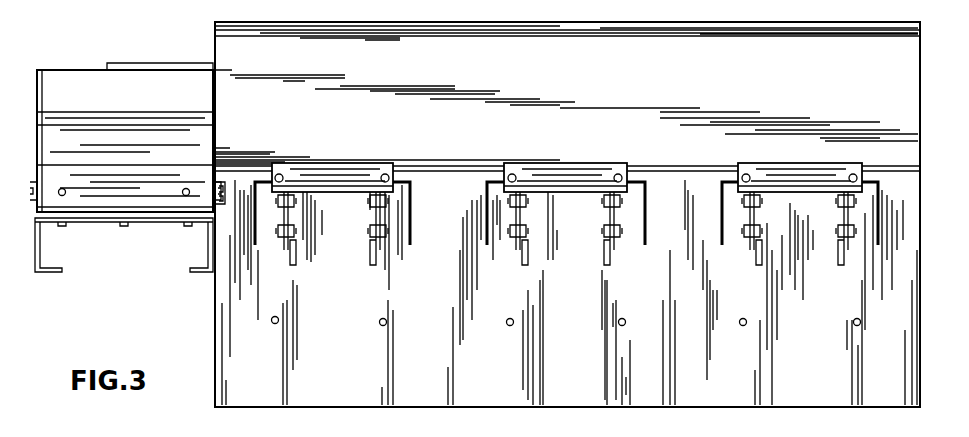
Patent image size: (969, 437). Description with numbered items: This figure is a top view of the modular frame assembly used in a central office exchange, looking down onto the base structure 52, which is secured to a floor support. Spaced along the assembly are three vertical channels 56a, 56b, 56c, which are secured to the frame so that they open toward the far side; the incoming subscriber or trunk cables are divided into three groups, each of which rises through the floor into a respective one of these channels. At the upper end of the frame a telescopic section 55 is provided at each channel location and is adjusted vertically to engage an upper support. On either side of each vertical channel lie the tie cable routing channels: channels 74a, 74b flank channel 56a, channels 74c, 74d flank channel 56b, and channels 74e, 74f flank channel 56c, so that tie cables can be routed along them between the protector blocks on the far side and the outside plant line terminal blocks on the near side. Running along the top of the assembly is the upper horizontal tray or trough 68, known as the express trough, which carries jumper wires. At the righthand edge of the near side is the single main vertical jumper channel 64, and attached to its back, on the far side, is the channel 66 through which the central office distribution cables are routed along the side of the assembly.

The base structure 52 is at (567, 374).
The telescopic section 55 is at (345, 178).
The vertical channel 56a is at (795, 238).
The vertical channel 56b is at (567, 238).
The vertical channel 56c is at (325, 238).
The main vertical jumper channel 64 is at (98, 88).
The channel 66 is at (120, 250).
The upper horizontal tray or trough 68 is at (548, 94).
The tie cable routing channel 74a is at (862, 239).
The tie cable routing channel 74b is at (730, 239).
The tie cable routing channel 74c is at (624, 239).
The tie cable routing channel 74d is at (498, 239).
The tie cable routing channel 74e is at (393, 237).
The tie cable routing channel 74f is at (268, 226).